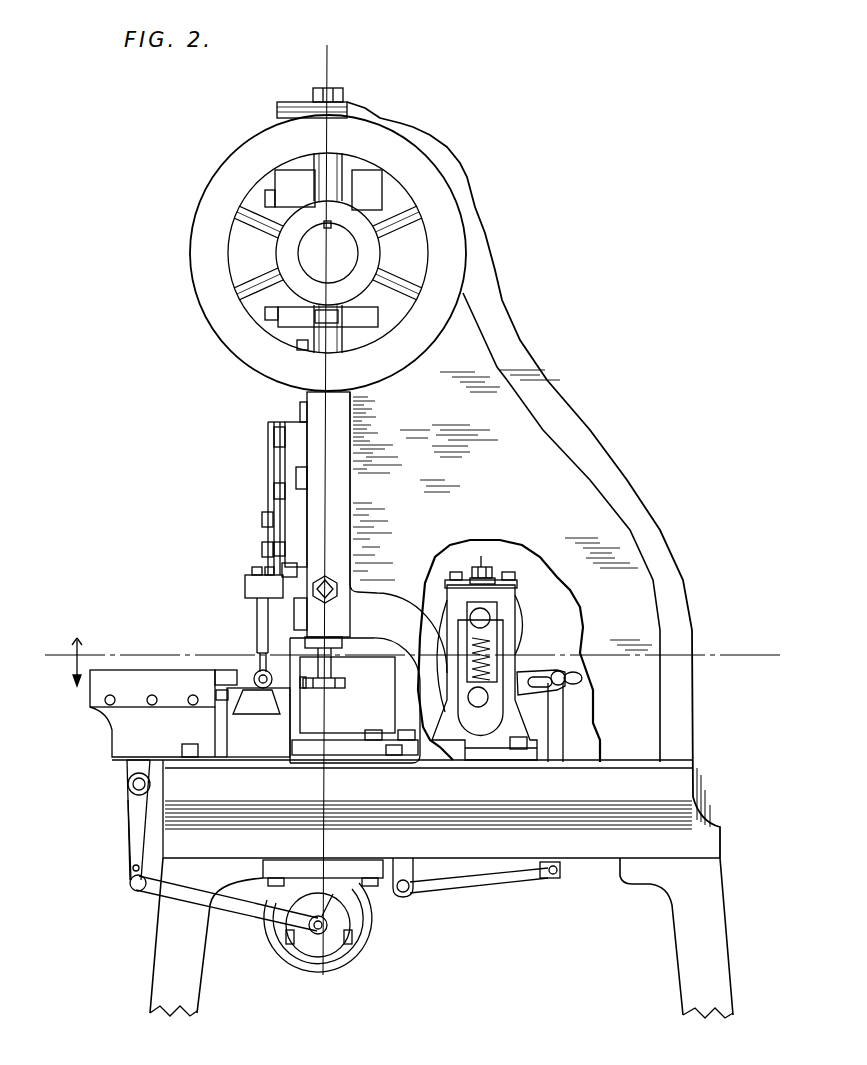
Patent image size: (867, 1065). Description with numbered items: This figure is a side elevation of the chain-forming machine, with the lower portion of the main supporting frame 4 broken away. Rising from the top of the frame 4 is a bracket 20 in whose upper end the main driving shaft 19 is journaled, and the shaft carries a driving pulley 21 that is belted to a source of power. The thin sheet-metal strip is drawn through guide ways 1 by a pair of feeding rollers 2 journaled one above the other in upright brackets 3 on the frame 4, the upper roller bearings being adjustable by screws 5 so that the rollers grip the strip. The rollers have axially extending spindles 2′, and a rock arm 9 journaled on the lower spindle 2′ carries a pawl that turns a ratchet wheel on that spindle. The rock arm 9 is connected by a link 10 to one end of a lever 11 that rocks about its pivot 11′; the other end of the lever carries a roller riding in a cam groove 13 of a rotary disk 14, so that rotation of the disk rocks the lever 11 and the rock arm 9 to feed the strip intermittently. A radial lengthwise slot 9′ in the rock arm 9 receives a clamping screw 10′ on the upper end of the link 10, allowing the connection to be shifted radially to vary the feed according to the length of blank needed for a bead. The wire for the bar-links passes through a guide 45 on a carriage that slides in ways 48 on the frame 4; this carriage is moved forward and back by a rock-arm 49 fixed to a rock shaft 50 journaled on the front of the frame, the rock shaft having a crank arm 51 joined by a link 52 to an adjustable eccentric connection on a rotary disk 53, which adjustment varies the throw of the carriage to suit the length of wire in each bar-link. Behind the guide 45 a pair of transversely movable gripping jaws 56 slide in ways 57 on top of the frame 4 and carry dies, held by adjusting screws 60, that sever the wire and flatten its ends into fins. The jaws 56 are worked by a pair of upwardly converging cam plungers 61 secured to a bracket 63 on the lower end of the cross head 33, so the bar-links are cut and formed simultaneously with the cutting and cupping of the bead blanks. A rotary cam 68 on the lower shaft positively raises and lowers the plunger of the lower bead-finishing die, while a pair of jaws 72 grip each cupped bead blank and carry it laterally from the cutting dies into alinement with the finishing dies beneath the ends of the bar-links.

The guide ways 1 is at (368, 660).
The feeding rollers 2 is at (517, 619).
The spindles 2′ is at (475, 617).
The upright brackets 3 is at (525, 645).
The main supporting frame 4 is at (713, 788).
The screws 5 is at (487, 572).
The rock arm 9 is at (572, 672).
The radial lengthwise slot 9′ is at (582, 677).
The link 10 is at (610, 728).
The clamping screw 10′ is at (559, 671).
The lever 11 is at (472, 878).
The pivot 11′ is at (405, 890).
The cam groove 13 is at (367, 933).
The rotary disk 14 is at (360, 960).
The main driving shaft 19 is at (328, 239).
The bracket 20 is at (550, 458).
The driving pulley 21 is at (448, 216).
The cross head 33 is at (280, 465).
The guide 45 is at (219, 676).
The ways 48 is at (123, 718).
The rock-arm 49 is at (130, 763).
The rock shaft 50 is at (127, 786).
The crank arm 51 is at (128, 832).
The link 52 is at (240, 908).
The rotary disk 53 is at (305, 940).
The gripping jaws 56 is at (250, 702).
The ways 57 is at (263, 712).
The screws 60 is at (272, 679).
The cam plungers 61 is at (264, 676).
The bracket 63 is at (250, 588).
The rotary cam 68 is at (317, 942).
The jaws 72 is at (326, 690).